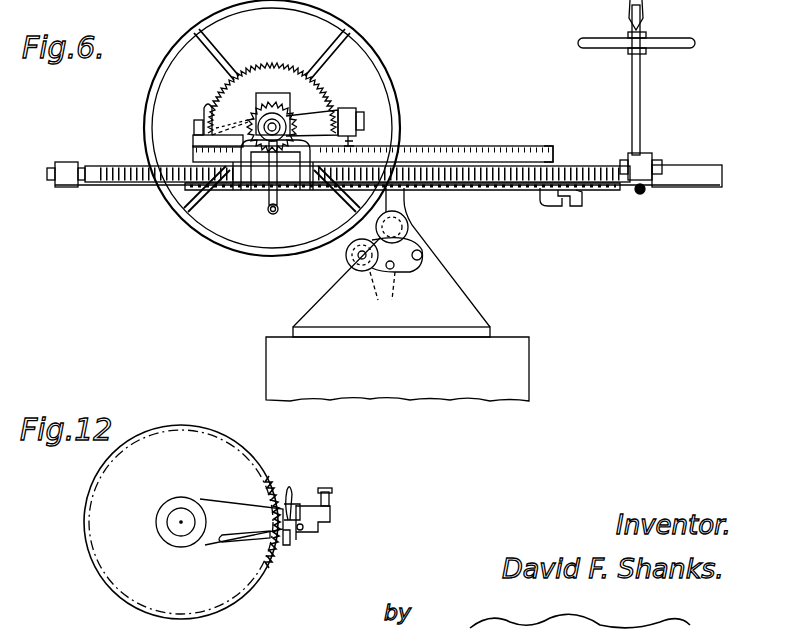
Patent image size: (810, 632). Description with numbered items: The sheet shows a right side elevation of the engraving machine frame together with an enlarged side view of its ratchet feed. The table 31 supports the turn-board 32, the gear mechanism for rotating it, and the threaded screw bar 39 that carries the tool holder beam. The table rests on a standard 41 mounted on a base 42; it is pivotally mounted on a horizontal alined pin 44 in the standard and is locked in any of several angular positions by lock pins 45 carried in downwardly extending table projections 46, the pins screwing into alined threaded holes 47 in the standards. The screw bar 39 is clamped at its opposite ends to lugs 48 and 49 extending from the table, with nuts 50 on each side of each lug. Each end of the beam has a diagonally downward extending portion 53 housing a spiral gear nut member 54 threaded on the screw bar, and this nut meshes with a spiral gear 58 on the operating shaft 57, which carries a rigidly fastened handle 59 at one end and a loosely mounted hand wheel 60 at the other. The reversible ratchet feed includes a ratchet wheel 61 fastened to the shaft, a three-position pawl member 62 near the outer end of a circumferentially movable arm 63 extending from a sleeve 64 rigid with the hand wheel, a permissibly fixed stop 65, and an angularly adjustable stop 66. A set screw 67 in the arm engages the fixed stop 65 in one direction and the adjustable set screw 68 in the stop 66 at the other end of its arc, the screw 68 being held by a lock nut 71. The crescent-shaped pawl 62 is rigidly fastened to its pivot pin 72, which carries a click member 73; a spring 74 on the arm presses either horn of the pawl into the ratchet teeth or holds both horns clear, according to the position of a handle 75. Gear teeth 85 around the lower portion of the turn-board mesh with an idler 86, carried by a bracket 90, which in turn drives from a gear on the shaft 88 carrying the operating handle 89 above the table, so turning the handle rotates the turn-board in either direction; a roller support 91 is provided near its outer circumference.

In FIG. 6, the table 31 is at (692, 170).
In FIG. 6, the work-holder 32 is at (543, 148).
In FIG. 6, the screw bar 39 is at (130, 182).
In FIG. 6, the standard 41 is at (452, 298).
In FIG. 6, the base 42 is at (397, 369).
In FIG. 6, the pin 44 is at (400, 227).
In FIG. 6, the lock pin 45 is at (350, 264).
In FIG. 6, the table projection 46 is at (345, 110).
In FIG. 6, the threaded hole 47 is at (382, 296).
In FIG. 6, the lug 48 is at (66, 185).
In FIG. 6, the lug 49 is at (644, 190).
In FIG. 6, the nut 50 is at (78, 165).
In FIG. 6, the diagonally downward extending portion 53 is at (234, 193).
In FIG. 6, the spiral gear nut member 54 is at (273, 181).
In FIG. 6, the operating shaft 57 is at (288, 97).
In FIG. 12, the operating shaft 57 is at (172, 515).
In FIG. 6, the spiral gear 58 is at (266, 93).
In FIG. 6, the handle 59 is at (279, 209).
In FIG. 6, the hand wheel 60 is at (374, 37).
In FIG. 6, the ratchet wheel 61 is at (256, 64).
In FIG. 12, the ratchet wheel 61 is at (270, 560).
In FIG. 12, the pawl 62 is at (312, 526).
In FIG. 6, the movable arm 63 is at (228, 118).
In FIG. 12, the movable arm 63 is at (241, 522).
In FIG. 12, the sleeve 64 is at (190, 543).
In FIG. 6, the fixed stop 65 is at (193, 139).
In FIG. 6, the adjustable stop 66 is at (321, 122).
In FIG. 6, the set screw 67 is at (194, 123).
In FIG. 12, the set screw 67 is at (330, 494).
In FIG. 6, the adjustable set screw 68 is at (360, 115).
In FIG. 6, the lock nut 71 is at (356, 140).
In FIG. 12, the pivot pin 72 is at (297, 508).
In FIG. 12, the click member 73 is at (302, 535).
In FIG. 12, the spring 74 is at (288, 546).
In FIG. 6, the handle 75 is at (206, 108).
In FIG. 12, the handle 75 is at (288, 492).
In FIG. 6, the gear teeth 85 is at (468, 190).
In FIG. 6, the idler 86 is at (542, 200).
In FIG. 6, the shaft 88 is at (641, 100).
In FIG. 6, the operating handle 89 is at (641, 30).
In FIG. 6, the bracket 90 is at (570, 204).
In FIG. 6, the roller support 91 is at (414, 148).